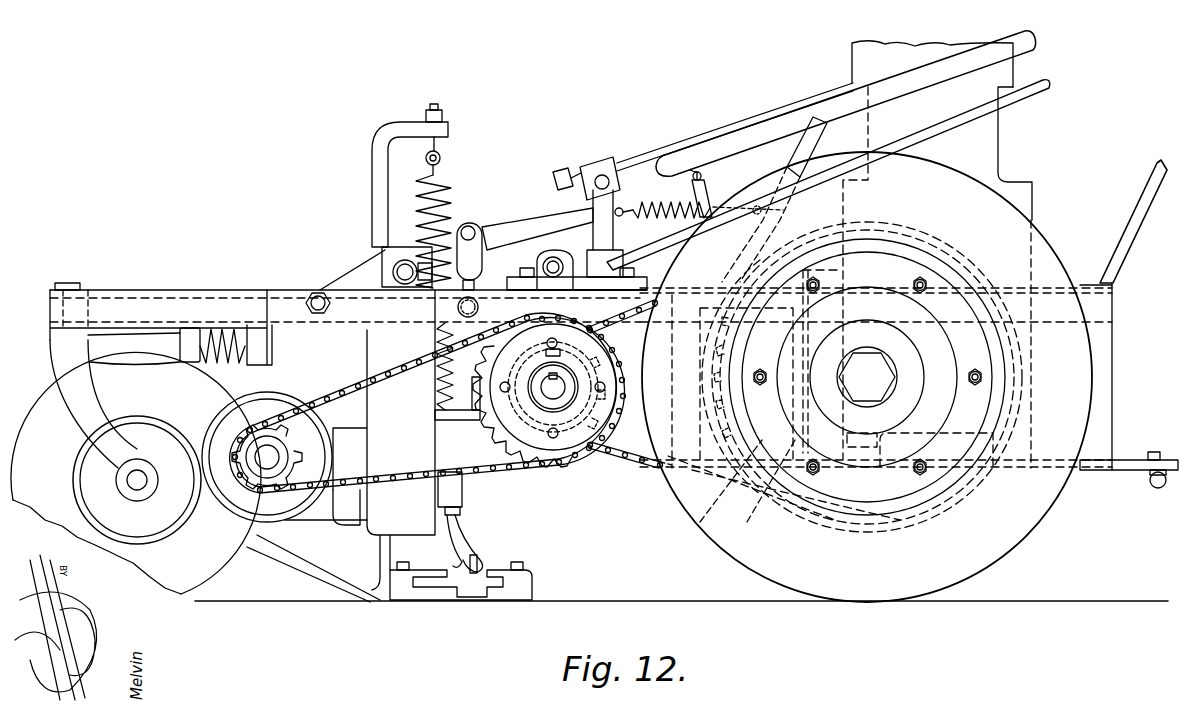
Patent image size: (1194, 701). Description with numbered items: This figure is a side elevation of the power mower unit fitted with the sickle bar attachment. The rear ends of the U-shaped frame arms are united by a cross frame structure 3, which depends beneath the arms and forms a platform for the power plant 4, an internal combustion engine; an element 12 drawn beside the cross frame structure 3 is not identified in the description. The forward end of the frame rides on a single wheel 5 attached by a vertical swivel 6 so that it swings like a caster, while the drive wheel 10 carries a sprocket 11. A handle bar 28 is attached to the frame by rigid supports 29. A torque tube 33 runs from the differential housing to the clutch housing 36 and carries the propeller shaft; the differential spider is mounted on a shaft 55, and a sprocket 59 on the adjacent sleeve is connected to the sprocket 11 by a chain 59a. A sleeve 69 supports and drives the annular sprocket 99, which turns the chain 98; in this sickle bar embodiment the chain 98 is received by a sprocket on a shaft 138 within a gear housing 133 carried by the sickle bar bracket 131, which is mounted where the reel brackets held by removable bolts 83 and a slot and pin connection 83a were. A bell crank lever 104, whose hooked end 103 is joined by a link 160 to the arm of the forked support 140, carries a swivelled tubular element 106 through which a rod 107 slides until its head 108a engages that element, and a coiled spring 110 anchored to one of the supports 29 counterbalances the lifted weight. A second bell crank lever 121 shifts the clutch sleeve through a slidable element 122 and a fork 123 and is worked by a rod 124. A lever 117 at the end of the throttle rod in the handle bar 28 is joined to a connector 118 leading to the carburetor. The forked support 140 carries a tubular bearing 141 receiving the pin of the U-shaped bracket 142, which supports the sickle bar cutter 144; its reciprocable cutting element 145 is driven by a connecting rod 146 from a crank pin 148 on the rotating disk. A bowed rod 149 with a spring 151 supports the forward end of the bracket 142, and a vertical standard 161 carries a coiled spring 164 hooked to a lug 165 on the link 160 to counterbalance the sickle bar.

The cross frame structure 3 is at (1128, 458).
The power plant 4 is at (998, 140).
The single wheel 5 is at (210, 568).
The vertical swivel 6 is at (66, 283).
The wheel 10 is at (1015, 550).
The sprocket 11 is at (750, 495).
The hitch ball 12 is at (1150, 486).
The handle bar 28 is at (888, 93).
The rigid support 29 is at (1125, 215).
The torque tube 33 is at (625, 418).
The clutch housing 36 is at (690, 520).
The shaft 55 is at (558, 400).
The sprocket 59 is at (615, 455).
The chain 59a is at (630, 470).
The sleeve 69 is at (548, 405).
The removable bolt 83 is at (318, 298).
The slot and pin connection 83a is at (478, 306).
The chain 98 is at (355, 385).
The sprocket 99 is at (508, 447).
The hooked end 103 is at (462, 222).
The bell crank lever 104 is at (520, 237).
The tubular element 106 is at (600, 162).
The rod 107 is at (753, 117).
The head 108a is at (560, 172).
The coiled spring 110 is at (660, 218).
The lever 117 is at (690, 180).
The connector 118 is at (700, 187).
The bell crank lever 121 is at (565, 258).
The slidable element 122 is at (556, 262).
The fork 123 is at (555, 300).
The rod 124 is at (628, 255).
The sickle bar unit bracket 131 is at (345, 278).
The gear housing 133 is at (232, 503).
The shaft 138 is at (285, 452).
The forked support 140 is at (352, 510).
The tubular bearing 141 is at (318, 520).
The sickle bar supporting bracket 142 is at (318, 572).
The sickle bar cutter 144 is at (520, 588).
The reciprocable cutting element 145 is at (482, 577).
The connecting rod 146 is at (470, 527).
The crank pin 148 is at (462, 495).
The bowed rod 149 is at (143, 330).
The spring 151 is at (215, 330).
The link 160 is at (470, 287).
The vertical standard 161 is at (372, 170).
The coiled spring 164 is at (418, 195).
The lug 165 is at (452, 424).